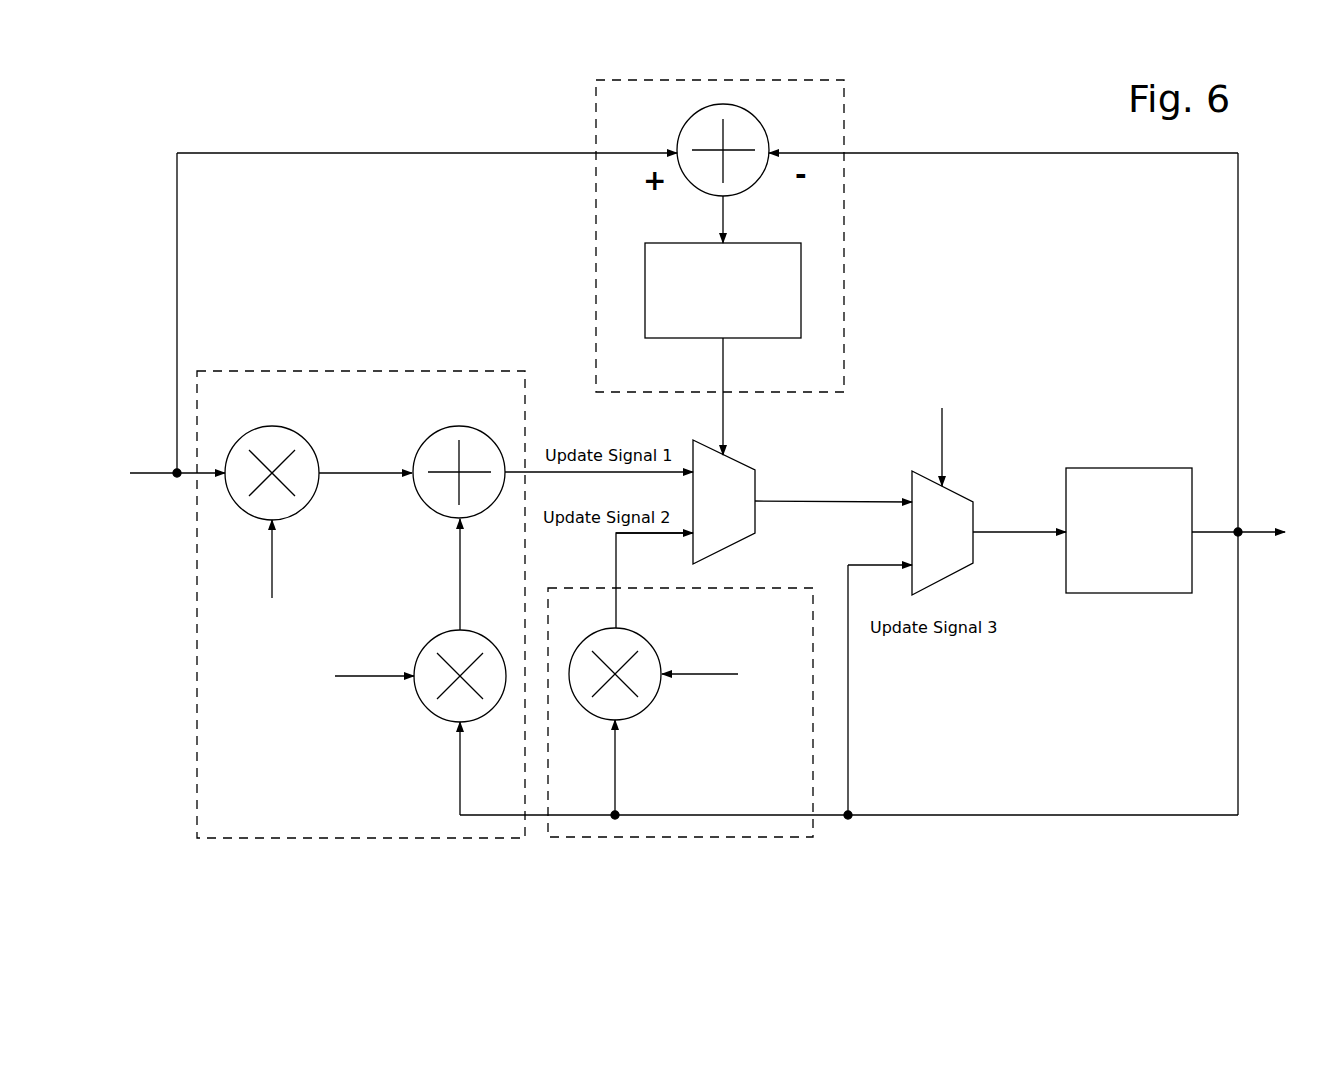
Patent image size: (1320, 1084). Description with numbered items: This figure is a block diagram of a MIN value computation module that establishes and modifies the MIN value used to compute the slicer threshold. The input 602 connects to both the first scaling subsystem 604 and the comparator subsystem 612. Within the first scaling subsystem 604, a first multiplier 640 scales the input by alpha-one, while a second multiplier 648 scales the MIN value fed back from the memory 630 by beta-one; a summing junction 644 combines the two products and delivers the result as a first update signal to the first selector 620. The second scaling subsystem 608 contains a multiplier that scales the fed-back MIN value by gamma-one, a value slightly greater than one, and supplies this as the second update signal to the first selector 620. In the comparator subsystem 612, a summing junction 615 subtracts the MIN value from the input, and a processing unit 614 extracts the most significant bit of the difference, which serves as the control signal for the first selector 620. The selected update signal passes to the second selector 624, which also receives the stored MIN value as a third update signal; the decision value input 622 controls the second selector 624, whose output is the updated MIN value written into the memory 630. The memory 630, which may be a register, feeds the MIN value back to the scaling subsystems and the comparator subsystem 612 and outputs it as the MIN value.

The input 602 is at (152, 480).
The first scaling subsystem 604 is at (370, 371).
The second scaling subsystem 608 is at (783, 588).
The comparator subsystem 612 is at (846, 270).
The processing unit 614 is at (745, 243).
The summing junction 615 is at (768, 134).
The first selector 620 is at (760, 465).
The decision value input 622 is at (945, 438).
The second selector 624 is at (965, 495).
The memory 630 is at (1125, 468).
The first multiplier 640 is at (283, 427).
The summing junction 644 is at (462, 428).
The second multiplier 648 is at (437, 718).